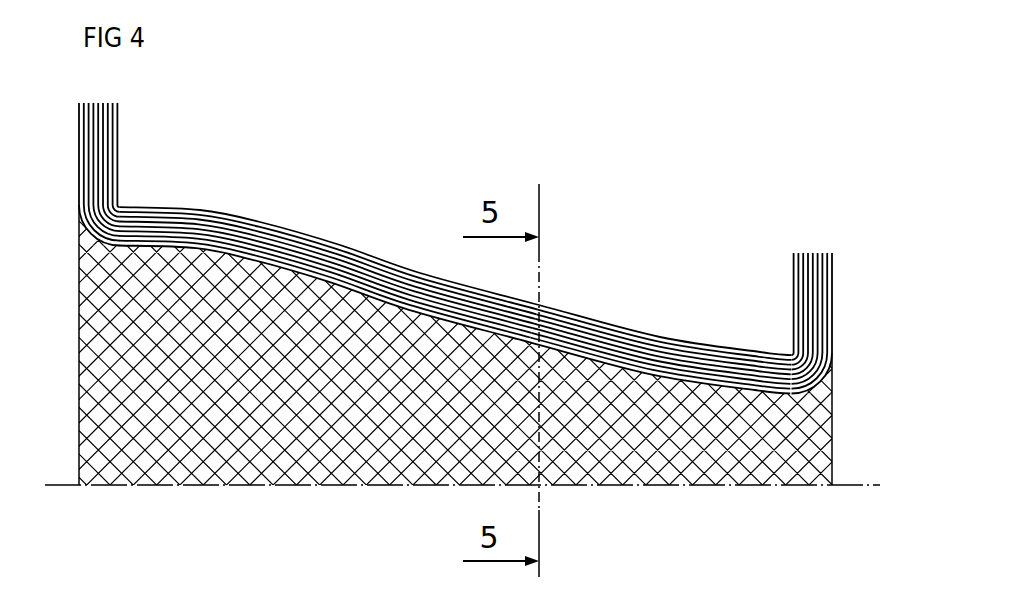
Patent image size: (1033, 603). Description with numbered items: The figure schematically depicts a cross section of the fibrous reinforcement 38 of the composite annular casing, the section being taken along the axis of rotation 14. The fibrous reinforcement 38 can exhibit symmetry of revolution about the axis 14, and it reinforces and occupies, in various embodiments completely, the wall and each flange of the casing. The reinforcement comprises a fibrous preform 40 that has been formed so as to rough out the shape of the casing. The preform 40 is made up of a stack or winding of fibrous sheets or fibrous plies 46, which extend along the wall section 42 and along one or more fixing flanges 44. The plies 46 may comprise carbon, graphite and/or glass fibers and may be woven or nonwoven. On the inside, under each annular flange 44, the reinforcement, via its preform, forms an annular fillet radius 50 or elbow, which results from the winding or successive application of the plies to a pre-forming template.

The axis of rotation 14 is at (386, 487).
The fibrous reinforcement 38 is at (455, 232).
The fibrous preform 40 is at (329, 230).
The wall section 42 is at (628, 288).
The fixing flange 44 is at (135, 146).
The fibrous plies 46 is at (300, 233).
The annular fillet radius 50 is at (79, 240).